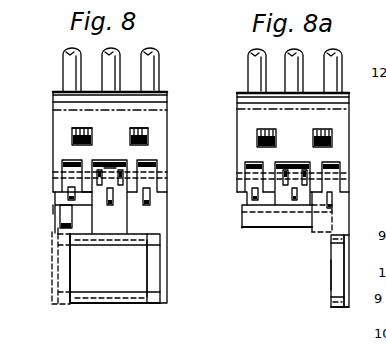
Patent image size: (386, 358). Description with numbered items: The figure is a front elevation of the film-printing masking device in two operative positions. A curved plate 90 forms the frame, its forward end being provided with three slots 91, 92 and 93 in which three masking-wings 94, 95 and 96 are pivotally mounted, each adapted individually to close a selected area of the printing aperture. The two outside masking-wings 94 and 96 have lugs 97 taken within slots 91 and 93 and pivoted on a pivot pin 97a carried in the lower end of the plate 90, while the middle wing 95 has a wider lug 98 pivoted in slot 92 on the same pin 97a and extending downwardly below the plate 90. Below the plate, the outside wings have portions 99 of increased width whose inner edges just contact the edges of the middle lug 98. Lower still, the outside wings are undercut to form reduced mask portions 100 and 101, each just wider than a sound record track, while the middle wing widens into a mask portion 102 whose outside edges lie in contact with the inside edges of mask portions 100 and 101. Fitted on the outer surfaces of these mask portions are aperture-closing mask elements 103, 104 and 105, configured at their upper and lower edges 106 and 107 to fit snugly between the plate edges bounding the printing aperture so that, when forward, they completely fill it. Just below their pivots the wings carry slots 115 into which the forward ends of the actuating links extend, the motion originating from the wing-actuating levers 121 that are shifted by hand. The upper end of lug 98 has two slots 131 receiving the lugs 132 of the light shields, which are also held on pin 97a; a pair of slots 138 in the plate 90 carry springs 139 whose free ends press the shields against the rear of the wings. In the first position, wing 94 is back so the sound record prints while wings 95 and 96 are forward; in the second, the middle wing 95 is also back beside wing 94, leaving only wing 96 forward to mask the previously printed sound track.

In FIG. 8, the wing-actuating lever 121 is at (150, 79).
In FIG. 8, the plate 90 is at (68, 116).
In FIG. 8A, the plate 90 is at (248, 123).
In FIG. 8, the slot 91 is at (63, 161).
In FIG. 8A, the slot 91 is at (254, 162).
In FIG. 8, the slot 92 is at (93, 160).
In FIG. 8A, the slot 92 is at (300, 163).
In FIG. 8, the slot 93 is at (157, 162).
In FIG. 8A, the slot 93 is at (341, 162).
In FIG. 8, the slot 138 is at (140, 128).
In FIG. 8, the spring 139 is at (148, 128).
In FIG. 8A, the spring 139 is at (322, 130).
In FIG. 8, the lug 132 is at (123, 160).
In FIG. 8, the slot 131 is at (108, 165).
In FIG. 8, the pivot pin 97a is at (58, 178).
In FIG. 8A, the pivot pin 97a is at (248, 170).
In FIG. 8, the lug 97 is at (62, 182).
In FIG. 8A, the lug 97 is at (248, 180).
In FIG. 8, the portion of increased width 99 is at (57, 208).
In FIG. 8A, the portion of increased width 99 is at (240, 200).
In FIG. 8, the lug 98 is at (108, 213).
In FIG. 8A, the lug 98 is at (293, 177).
In FIG. 8, the slot 115 is at (76, 193).
In FIG. 8, the masking-wing 94 is at (53, 213).
In FIG. 8A, the masking-wing 94 is at (237, 216).
In FIG. 8, the mask element 103 is at (50, 230).
In FIG. 8A, the mask element 103 is at (248, 228).
In FIG. 8, the mask portion 100 is at (53, 273).
In FIG. 8, the masking-wing 96 is at (168, 272).
In FIG. 8A, the masking-wing 96 is at (326, 291).
In FIG. 8, the upper edge 106 is at (113, 242).
In FIG. 8A, the upper edge 106 is at (343, 242).
In FIG. 8, the mask portion 101 is at (162, 257).
In FIG. 8A, the mask portion 101 is at (346, 262).
In FIG. 8, the lower edge 107 is at (117, 300).
In FIG. 8A, the lower edge 107 is at (334, 307).
In FIG. 8, the mask portion 102 is at (95, 307).
In FIG. 8, the mask element 105 is at (90, 283).
In FIG. 8A, the mask element 105 is at (274, 228).
In FIG. 8, the masking-wing 95 is at (127, 307).
In FIG. 8A, the masking-wing 95 is at (289, 230).
In FIG. 8, the mask element 104 is at (155, 283).
In FIG. 8A, the mask element 104 is at (333, 263).